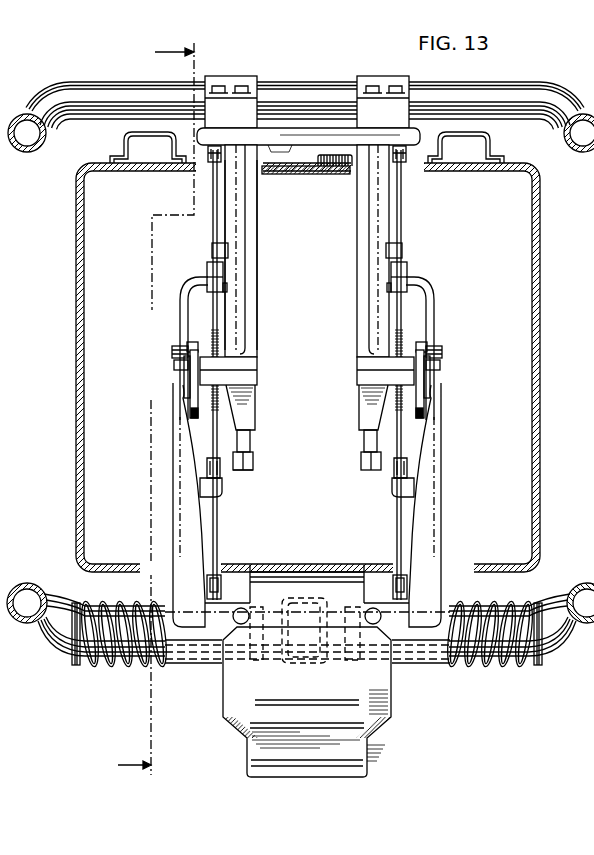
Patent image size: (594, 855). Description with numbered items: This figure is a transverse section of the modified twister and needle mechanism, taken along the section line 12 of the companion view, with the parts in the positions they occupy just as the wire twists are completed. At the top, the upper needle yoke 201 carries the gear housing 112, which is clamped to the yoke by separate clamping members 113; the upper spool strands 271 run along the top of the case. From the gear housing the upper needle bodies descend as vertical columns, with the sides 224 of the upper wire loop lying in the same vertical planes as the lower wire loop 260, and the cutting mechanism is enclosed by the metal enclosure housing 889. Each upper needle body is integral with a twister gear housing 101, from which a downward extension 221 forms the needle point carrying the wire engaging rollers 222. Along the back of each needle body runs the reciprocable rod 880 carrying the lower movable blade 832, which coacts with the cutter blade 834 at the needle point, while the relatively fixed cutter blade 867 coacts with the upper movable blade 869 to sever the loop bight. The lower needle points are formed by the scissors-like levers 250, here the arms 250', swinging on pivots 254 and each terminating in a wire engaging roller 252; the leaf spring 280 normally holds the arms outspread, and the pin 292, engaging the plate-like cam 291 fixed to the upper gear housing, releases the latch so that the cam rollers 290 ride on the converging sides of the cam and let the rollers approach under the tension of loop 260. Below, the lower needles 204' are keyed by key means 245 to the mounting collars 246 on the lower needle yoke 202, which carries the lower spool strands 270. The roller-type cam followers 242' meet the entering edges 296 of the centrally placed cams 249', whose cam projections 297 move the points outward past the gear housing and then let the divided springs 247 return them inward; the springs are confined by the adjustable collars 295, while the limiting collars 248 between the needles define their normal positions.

The section line 12- 12 is at (163, 51).
The upper needle yoke 201 is at (139, 84).
The clamping members 113 is at (254, 79).
The gear housing 112 is at (264, 160).
The upper spool strands 271 is at (215, 146).
The sides of upper wire loop 224 is at (224, 226).
The lower wire loop 260 is at (217, 537).
The twister gear housing 101 is at (258, 378).
The downward extensions 221 is at (237, 440).
The reciprocable rod 880 is at (361, 451).
The lower movable blade 832 is at (360, 463).
The wire engaging rollers 222 is at (222, 470).
The cutter blade 834 is at (392, 490).
The scissors-like levers 250 is at (167, 348).
The needle point arms 250' is at (443, 348).
The wire engaging rollers 252 is at (207, 265).
The upper movable blade 869 is at (229, 250).
The relatively fixed cutter blade 867 is at (227, 287).
The enclosure housing 889 is at (258, 335).
The cam rollers 290 is at (193, 342).
The leaf spring 280 is at (172, 351).
The pin 292 is at (174, 364).
The pivots 254 is at (184, 372).
The plate-like cam 291 is at (187, 412).
The lower needles 204' is at (301, 505).
The mounting collars 246 is at (192, 643).
The key means 245 is at (210, 658).
The lower spool strands 270 is at (214, 591).
The cam followers 242' is at (307, 604).
The limiting collars 248 is at (257, 662).
The entering edges 296 is at (247, 762).
The cams 249' is at (341, 732).
The cam projections 297 is at (78, 666).
The adjustable collars 295 is at (534, 666).
The lower needle yoke 202 is at (50, 645).
The spiral spring 247 is at (118, 668).